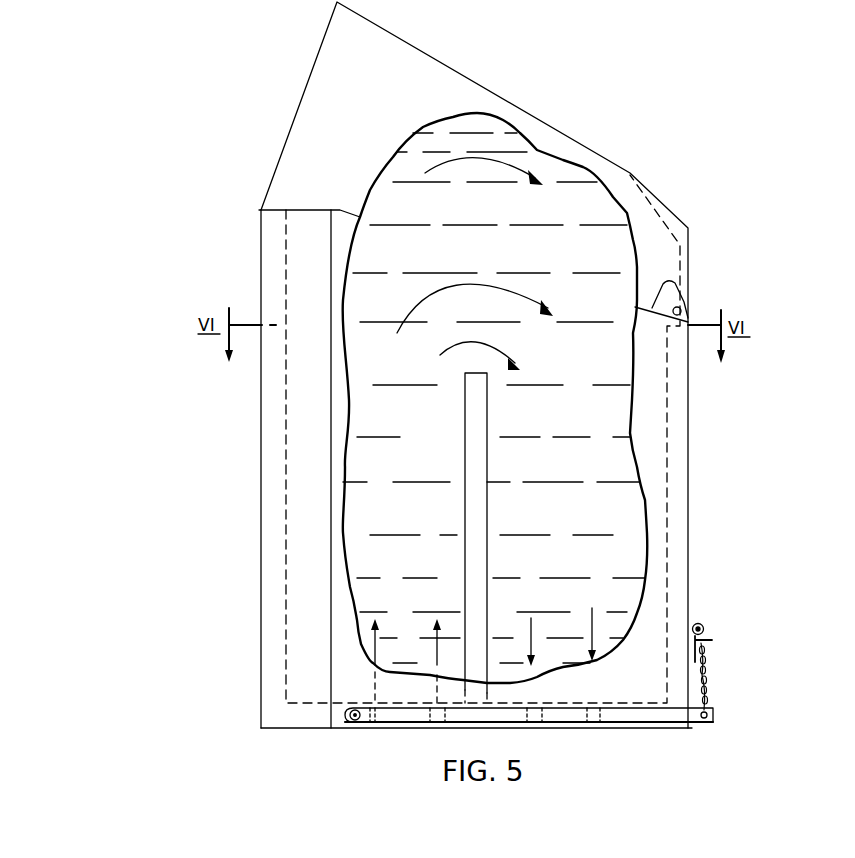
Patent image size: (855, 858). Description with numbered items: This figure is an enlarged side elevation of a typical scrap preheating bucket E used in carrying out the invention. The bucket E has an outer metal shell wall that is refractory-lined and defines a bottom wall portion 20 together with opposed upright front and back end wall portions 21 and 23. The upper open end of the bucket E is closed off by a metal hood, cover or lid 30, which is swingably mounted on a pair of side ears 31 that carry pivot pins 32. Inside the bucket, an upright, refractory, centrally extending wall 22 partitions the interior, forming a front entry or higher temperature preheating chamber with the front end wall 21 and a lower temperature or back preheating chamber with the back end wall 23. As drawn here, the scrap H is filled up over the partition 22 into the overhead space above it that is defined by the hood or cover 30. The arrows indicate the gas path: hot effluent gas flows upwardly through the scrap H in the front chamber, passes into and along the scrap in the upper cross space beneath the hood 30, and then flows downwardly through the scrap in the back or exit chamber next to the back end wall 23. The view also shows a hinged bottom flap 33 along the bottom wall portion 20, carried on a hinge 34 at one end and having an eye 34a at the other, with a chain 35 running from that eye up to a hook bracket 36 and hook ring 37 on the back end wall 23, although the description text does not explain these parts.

The bottom wall portion 20 is at (300, 730).
The front end wall portion 21 is at (262, 533).
The centrally extending wall 22 is at (466, 426).
The back end wall portion 23 is at (665, 201).
The hood 30 is at (580, 154).
The side ears 31 is at (675, 296).
The pivot pins 32 is at (684, 312).
The bottom flap 33 is at (648, 718).
The hinge 34 is at (355, 722).
The flap eye 34a is at (712, 723).
The chain 35 is at (708, 673).
The hook bracket 36 is at (713, 640).
The hook ring 37 is at (702, 623).
The scrap preheating bucket E is at (268, 450).
The scrap H is at (592, 445).